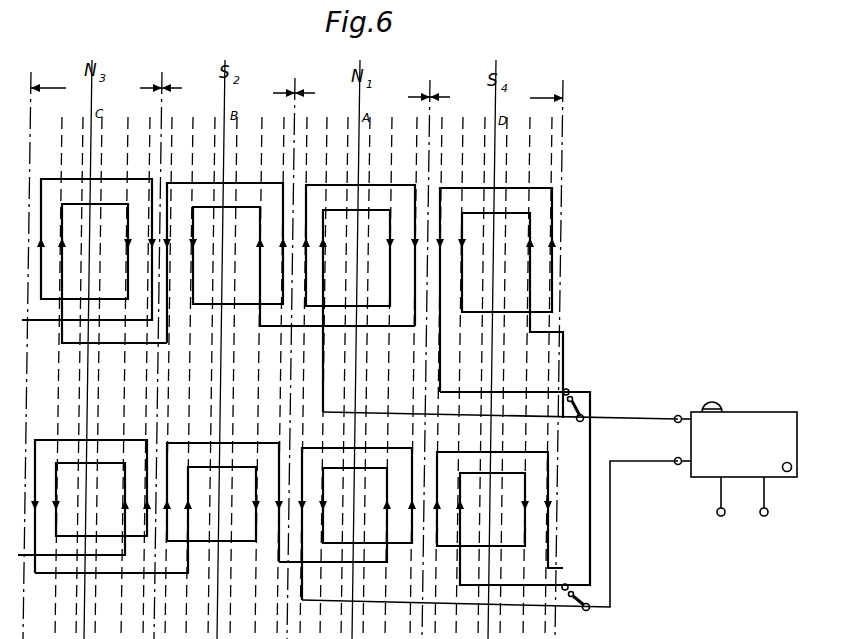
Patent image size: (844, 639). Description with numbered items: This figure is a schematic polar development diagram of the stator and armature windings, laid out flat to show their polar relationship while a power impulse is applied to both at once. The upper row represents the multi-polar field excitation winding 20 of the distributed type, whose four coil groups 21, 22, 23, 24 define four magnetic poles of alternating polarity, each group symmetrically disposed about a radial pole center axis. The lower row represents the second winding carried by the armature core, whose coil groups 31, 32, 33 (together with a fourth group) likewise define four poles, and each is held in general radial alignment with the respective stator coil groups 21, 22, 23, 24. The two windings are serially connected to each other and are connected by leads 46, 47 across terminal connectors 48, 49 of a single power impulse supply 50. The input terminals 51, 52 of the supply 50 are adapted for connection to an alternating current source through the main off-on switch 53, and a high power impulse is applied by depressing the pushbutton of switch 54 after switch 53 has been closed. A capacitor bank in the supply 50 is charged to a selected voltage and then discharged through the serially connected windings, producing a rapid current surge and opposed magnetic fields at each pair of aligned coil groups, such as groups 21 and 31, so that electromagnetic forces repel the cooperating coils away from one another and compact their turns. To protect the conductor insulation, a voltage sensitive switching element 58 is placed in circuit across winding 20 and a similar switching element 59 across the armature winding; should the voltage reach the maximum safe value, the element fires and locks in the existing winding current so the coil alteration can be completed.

The field excitation winding 20 is at (572, 266).
The coil group 21 is at (419, 227).
The coil group 22 is at (284, 230).
The coil group 23 is at (170, 238).
The coil group 24 is at (555, 223).
The coil group 31 is at (413, 475).
The coil group 32 is at (282, 480).
The coil group 33 is at (148, 490).
The lead 46 is at (636, 416).
The lead 47 is at (644, 463).
The terminal connector 48 is at (678, 415).
The terminal connector 49 is at (678, 465).
The power impulse supply 50 is at (745, 412).
The input terminal 51 is at (718, 520).
The input terminal 52 is at (768, 519).
The main off-on switch 53 is at (782, 463).
The switch 54 is at (712, 402).
The switching element 58 is at (588, 398).
The switching element 59 is at (600, 592).